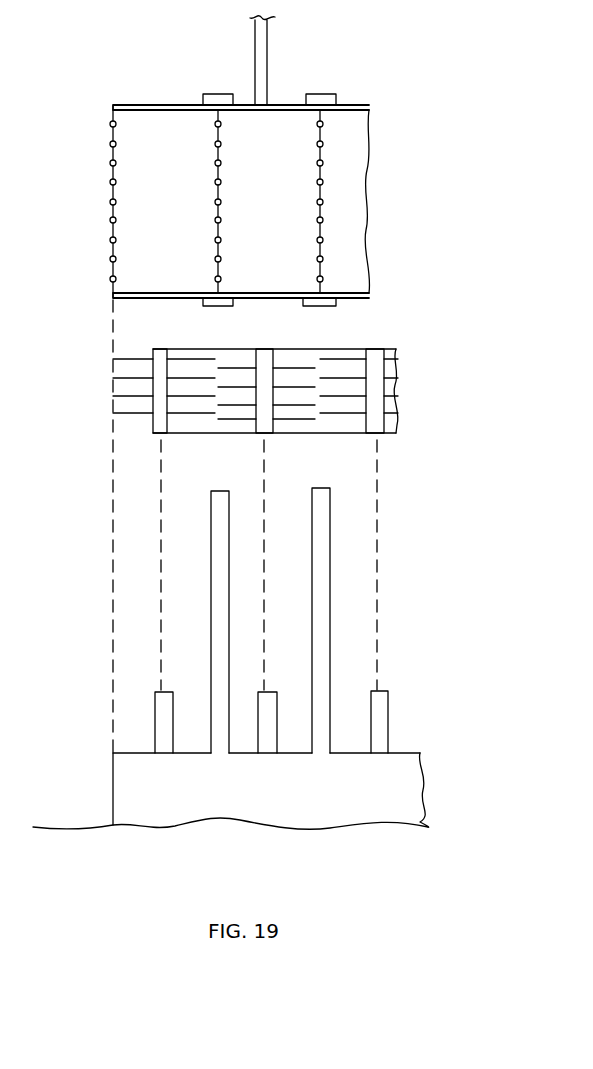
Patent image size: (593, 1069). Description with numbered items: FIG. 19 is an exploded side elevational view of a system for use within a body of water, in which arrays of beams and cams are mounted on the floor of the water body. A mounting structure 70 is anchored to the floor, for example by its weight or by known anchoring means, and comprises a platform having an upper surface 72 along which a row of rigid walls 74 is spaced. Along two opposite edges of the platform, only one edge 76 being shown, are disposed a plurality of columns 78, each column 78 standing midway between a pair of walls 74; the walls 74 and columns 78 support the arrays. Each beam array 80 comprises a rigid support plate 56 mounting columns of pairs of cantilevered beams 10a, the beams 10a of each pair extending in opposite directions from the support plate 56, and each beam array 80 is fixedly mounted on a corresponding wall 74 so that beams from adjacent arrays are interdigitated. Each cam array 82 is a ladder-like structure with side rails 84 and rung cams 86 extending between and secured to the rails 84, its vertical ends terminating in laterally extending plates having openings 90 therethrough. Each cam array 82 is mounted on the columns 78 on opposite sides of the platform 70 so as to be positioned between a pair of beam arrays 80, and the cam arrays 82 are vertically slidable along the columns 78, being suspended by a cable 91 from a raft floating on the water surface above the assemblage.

The cantilevered beams 10a is at (113, 372).
The rigid support plate 56 is at (260, 415).
The mounting structure 70 is at (248, 658).
The upper surface 72 is at (405, 752).
The rigid walls 74 is at (156, 716).
The platform edge 76 is at (230, 823).
The columns 78 is at (214, 545).
The beam array 80 is at (167, 432).
The cam array 82 is at (113, 262).
The side rails 84 is at (218, 222).
The rung cams 86 is at (113, 142).
The openings 90 is at (271, 173).
The cable 91 is at (268, 90).